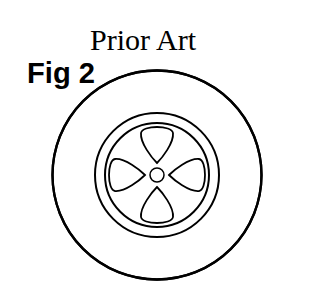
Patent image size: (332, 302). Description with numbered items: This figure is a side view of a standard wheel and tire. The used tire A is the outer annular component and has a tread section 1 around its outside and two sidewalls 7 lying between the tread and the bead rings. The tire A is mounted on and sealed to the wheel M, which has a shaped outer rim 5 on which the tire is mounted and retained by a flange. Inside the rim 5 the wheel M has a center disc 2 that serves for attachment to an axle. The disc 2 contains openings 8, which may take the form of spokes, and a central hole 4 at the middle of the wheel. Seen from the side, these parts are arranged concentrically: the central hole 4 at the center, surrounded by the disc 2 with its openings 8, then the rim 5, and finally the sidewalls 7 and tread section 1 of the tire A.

The tread section 1 is at (262, 158).
The sidewall 7 is at (187, 98).
The outer rim 5 is at (192, 220).
The center disc 2 is at (183, 203).
The openings 8 is at (155, 207).
The central hole 4 is at (162, 170).
The used tire A is at (235, 102).
The wheel M is at (67, 279).